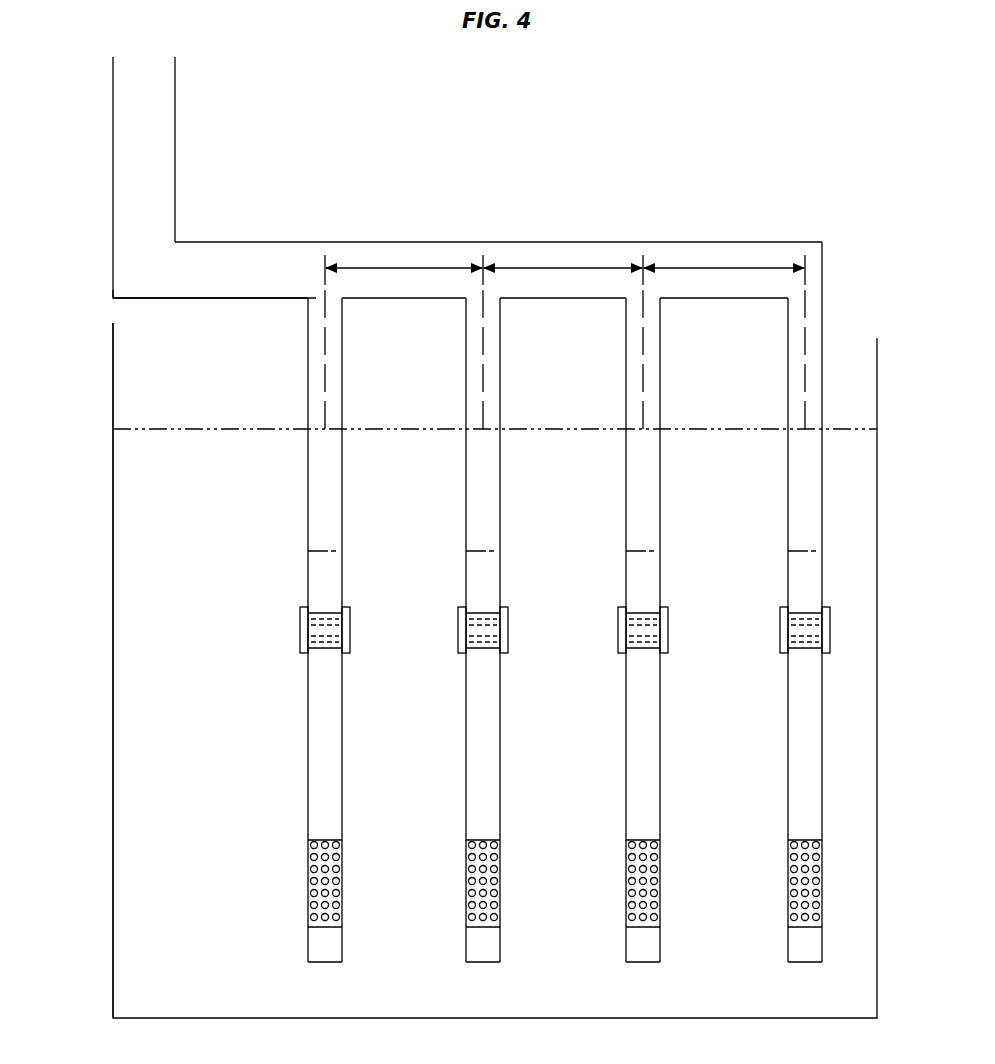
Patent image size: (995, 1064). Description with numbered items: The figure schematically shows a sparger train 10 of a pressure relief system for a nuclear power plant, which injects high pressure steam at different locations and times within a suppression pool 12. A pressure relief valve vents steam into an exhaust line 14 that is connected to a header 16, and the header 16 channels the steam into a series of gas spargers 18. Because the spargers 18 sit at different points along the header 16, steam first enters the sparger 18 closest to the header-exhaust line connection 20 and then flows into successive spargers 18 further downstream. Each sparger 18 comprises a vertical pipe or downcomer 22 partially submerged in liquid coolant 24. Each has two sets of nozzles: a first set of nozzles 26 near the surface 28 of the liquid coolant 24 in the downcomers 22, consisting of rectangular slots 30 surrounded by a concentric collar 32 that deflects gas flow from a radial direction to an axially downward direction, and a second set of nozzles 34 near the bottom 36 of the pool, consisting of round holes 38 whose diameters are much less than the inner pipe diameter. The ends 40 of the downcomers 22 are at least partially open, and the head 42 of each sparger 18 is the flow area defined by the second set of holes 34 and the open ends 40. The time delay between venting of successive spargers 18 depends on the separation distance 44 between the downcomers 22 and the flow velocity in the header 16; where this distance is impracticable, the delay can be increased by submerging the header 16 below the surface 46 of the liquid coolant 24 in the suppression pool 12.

The sparger train 10 is at (834, 108).
The suppression pool 12 is at (113, 897).
The exhaust line 14 is at (176, 84).
The header 16 is at (328, 242).
The gas spargers 18 is at (299, 346).
The header-exhaust line connection 20 is at (142, 240).
The downcomers 22 is at (308, 383).
The liquid coolant 24 is at (153, 629).
The first set of nozzles 26 is at (325, 624).
The surface of the liquid coolant 28 is at (333, 551).
The rectangular slots 30 is at (312, 652).
The concentric collar 32 is at (350, 631).
The second set of nozzles 34 is at (342, 849).
The bottom of the suppression pool 36 is at (236, 982).
The round holes 38 is at (342, 883).
The ends of the downcomers 40 is at (325, 963).
The head 42 is at (296, 890).
The separation distance 44 is at (412, 268).
The surface of the liquid coolant in the suppression pool 46 is at (142, 423).